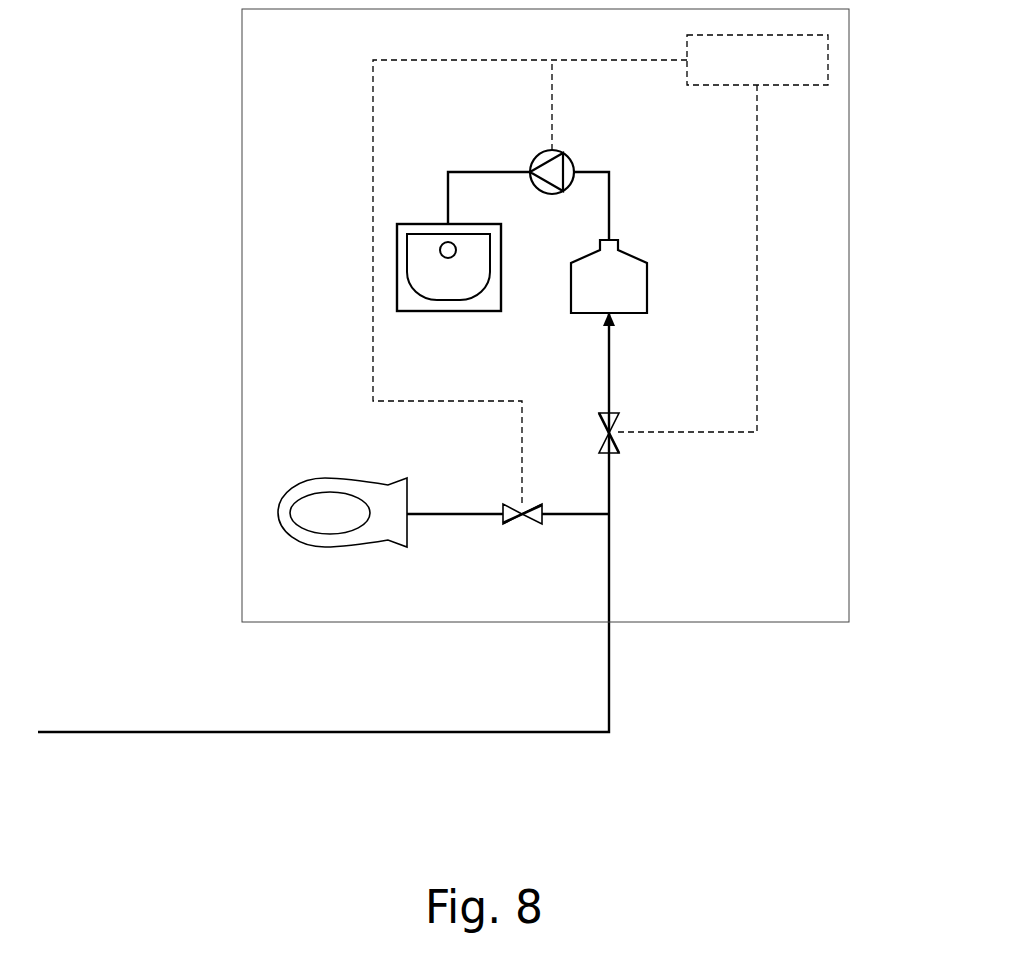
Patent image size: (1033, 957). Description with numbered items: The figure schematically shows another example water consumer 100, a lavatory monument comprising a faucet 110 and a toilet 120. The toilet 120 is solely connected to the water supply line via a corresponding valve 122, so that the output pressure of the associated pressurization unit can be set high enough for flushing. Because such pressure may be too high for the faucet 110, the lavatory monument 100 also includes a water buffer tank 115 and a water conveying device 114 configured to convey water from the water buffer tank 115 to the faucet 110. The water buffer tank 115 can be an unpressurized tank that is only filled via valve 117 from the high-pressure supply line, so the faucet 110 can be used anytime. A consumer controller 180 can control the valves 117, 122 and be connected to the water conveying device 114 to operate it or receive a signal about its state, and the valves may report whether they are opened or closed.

The water consumer 100 is at (242, 161).
The faucet 110 is at (417, 263).
The water conveying device 114 is at (566, 168).
The water buffer tank 115 is at (638, 292).
The valve 117 is at (616, 443).
The toilet 120 is at (287, 522).
The valve 122 is at (505, 507).
The consumer controller 180 is at (797, 55).